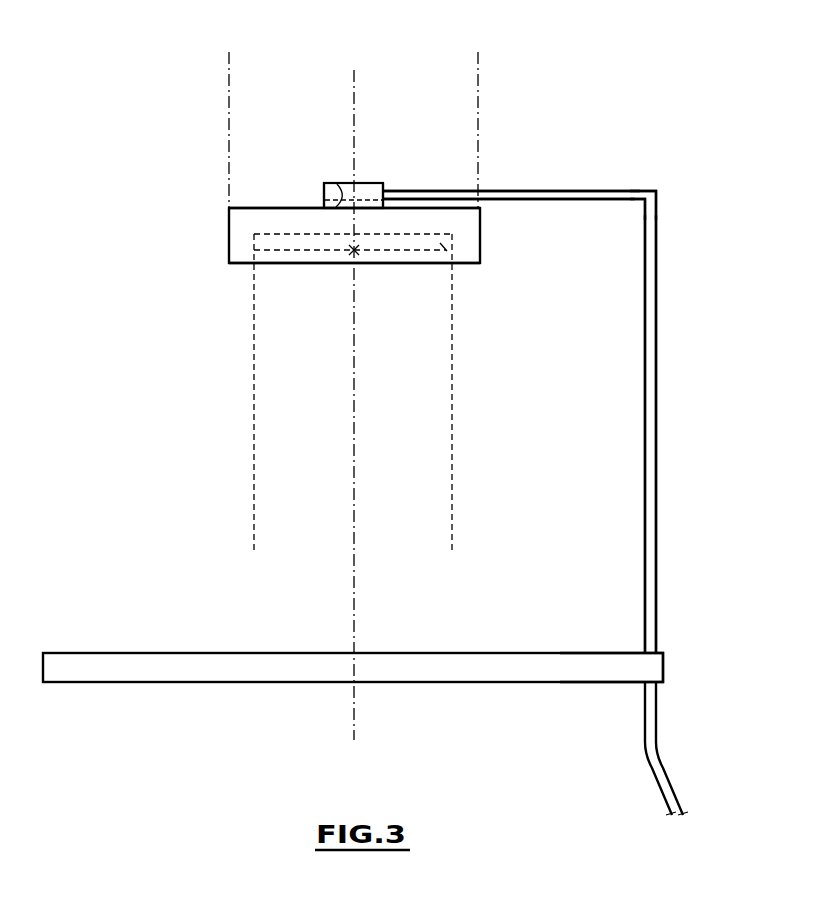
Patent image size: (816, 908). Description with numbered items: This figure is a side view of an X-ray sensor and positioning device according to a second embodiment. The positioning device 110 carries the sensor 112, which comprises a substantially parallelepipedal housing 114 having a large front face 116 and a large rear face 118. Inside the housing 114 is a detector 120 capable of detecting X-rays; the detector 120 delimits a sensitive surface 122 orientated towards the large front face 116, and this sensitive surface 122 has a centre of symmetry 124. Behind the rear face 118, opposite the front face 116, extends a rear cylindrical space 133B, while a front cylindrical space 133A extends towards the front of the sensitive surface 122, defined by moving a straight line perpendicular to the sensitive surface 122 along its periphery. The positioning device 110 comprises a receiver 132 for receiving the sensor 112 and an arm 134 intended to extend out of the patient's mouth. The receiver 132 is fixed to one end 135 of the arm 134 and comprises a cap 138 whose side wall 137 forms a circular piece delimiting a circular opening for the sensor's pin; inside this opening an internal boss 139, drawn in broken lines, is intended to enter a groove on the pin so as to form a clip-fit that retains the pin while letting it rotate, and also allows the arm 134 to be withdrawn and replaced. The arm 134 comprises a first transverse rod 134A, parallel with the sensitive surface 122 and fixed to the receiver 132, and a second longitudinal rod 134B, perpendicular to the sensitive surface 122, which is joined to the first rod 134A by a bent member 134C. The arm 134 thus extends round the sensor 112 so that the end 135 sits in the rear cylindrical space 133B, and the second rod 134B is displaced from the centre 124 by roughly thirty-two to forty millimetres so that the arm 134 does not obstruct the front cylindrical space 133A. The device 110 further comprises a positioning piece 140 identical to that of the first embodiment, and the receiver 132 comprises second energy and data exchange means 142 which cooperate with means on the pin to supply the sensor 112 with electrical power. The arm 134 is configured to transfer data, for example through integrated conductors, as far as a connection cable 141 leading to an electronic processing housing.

The positioning device 110 is at (582, 721).
The sensor 112 is at (242, 281).
The housing 114 is at (246, 245).
The large front face 116 is at (337, 266).
The large rear face 118 is at (270, 205).
The detector 120 is at (456, 268).
The sensitive surface 122 is at (381, 258).
The centre of symmetry 124 is at (355, 252).
The receiver 132 is at (361, 182).
The front cylindrical space 133A is at (367, 527).
The rear cylindrical space 133B is at (305, 78).
The arm 134 is at (593, 229).
The first transverse rod 134A is at (545, 191).
The second longitudinal rod 134B is at (659, 574).
The bent member 134C is at (634, 191).
The end of the arm 135 is at (387, 189).
The side wall 137 is at (323, 188).
The cap 138 is at (366, 183).
The internal boss 139 is at (332, 183).
The positioning piece 140 is at (129, 716).
The connection cable 141 is at (673, 782).
The second energy and data exchange means 142 is at (348, 182).